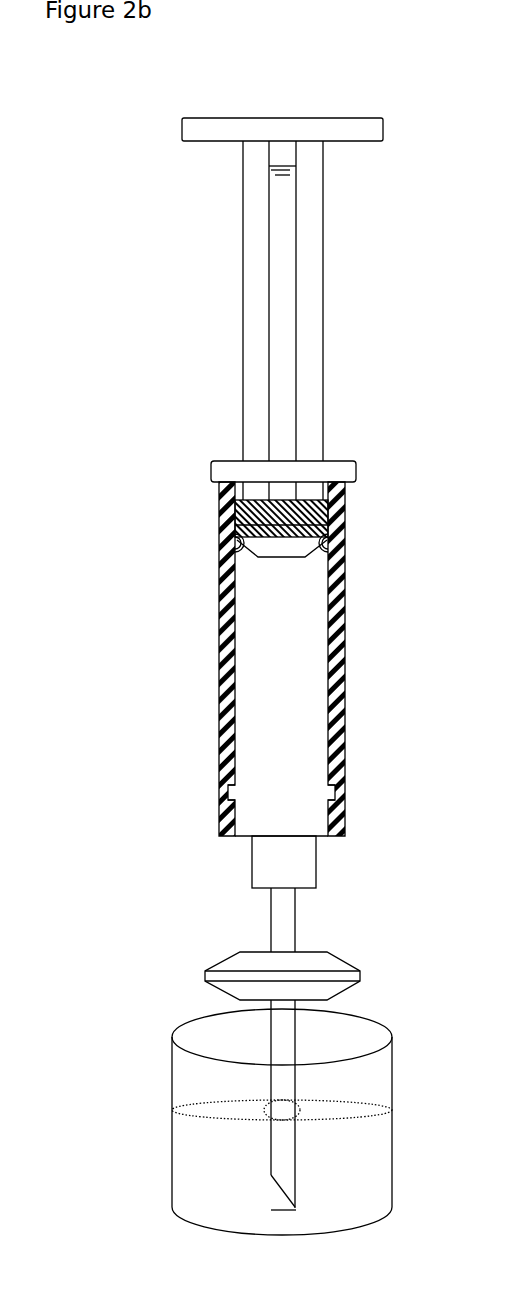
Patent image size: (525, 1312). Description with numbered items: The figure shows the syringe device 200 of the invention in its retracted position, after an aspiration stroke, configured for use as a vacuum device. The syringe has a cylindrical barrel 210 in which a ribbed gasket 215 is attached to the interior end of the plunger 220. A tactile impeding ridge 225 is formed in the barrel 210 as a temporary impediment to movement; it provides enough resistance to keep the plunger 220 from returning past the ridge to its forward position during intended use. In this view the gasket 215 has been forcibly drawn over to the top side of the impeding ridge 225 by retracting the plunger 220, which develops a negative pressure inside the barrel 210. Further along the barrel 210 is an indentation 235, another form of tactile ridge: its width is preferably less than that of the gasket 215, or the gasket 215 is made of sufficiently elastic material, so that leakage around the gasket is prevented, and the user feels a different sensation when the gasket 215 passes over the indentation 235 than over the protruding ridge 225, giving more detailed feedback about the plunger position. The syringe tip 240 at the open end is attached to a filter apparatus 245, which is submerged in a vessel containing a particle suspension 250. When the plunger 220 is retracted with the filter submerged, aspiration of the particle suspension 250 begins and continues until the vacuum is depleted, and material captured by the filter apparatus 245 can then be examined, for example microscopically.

The syringe device 200 is at (220, 476).
The barrel 210 is at (203, 734).
The ribbed gasket 215 is at (267, 542).
The plunger rod 220 is at (344, 334).
The impeding ridge 225 is at (367, 543).
The indentation 235 is at (203, 795).
The syringe tip 240 is at (235, 869).
The filter apparatus 245 is at (322, 962).
The particle suspension 250 is at (200, 1112).